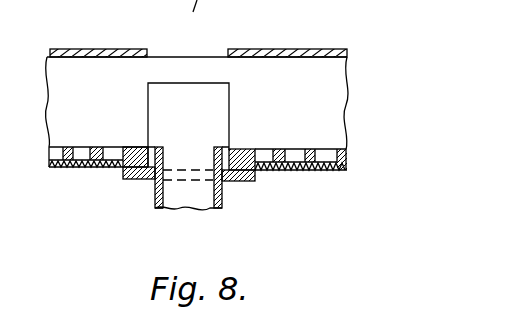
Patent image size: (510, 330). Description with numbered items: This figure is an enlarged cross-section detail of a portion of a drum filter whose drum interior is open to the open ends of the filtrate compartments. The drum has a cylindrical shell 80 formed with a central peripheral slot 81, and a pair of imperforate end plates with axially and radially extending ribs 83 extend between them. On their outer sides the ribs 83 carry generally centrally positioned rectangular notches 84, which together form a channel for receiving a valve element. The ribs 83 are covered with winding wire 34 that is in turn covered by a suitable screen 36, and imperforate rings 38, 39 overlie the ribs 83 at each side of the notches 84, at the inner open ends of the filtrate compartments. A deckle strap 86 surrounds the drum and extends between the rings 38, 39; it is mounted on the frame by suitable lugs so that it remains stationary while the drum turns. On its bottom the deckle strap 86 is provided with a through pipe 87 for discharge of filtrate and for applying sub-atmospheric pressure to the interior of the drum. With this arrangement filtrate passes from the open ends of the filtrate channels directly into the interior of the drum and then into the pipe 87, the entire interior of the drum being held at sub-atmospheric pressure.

The cylindrical shell 80 is at (108, 36).
The central peripheral slot 81 is at (200, 56).
The ribs 83 is at (341, 100).
The rectangular notches 84 is at (215, 83).
The winding wire 34 is at (348, 158).
The screen 36 is at (328, 171).
The imperforate ring 38 is at (148, 180).
The imperforate ring 39 is at (245, 160).
The deckle strap 86 is at (156, 185).
The through pipe 87 is at (178, 202).